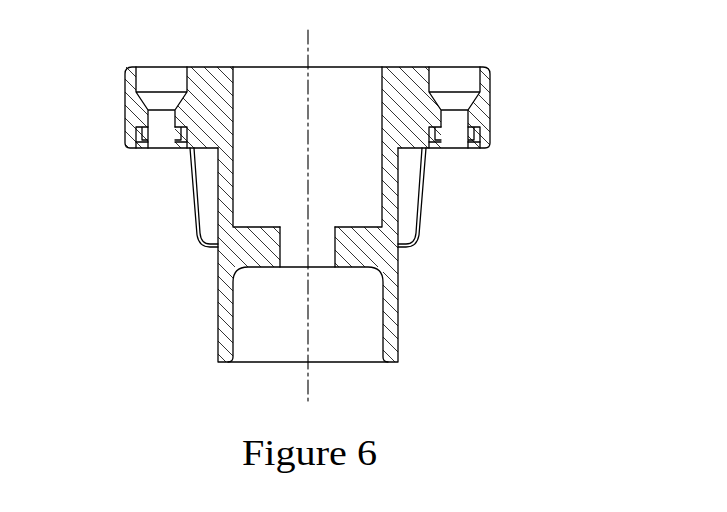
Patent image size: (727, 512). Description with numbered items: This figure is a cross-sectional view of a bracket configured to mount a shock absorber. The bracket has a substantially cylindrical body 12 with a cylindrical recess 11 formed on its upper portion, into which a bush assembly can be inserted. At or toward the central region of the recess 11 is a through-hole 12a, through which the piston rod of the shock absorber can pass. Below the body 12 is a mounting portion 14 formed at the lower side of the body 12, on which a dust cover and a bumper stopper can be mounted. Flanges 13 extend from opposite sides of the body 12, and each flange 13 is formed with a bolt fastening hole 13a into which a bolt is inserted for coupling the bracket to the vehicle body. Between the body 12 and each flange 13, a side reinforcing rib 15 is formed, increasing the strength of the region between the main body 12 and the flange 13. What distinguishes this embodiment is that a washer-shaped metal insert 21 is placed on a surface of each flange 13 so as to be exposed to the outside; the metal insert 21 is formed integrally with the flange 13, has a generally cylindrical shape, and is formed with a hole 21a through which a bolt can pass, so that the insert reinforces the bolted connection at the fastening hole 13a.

The recess 11 is at (340, 96).
The body 12 is at (399, 307).
The through-hole 12a is at (288, 268).
The flange 13 is at (123, 92).
The bolt fastening hole 13a is at (138, 78).
The mounting portion 14 is at (346, 345).
The side reinforcing rib 15 is at (422, 217).
The metal insert 21 is at (128, 143).
The hole 21a is at (152, 149).